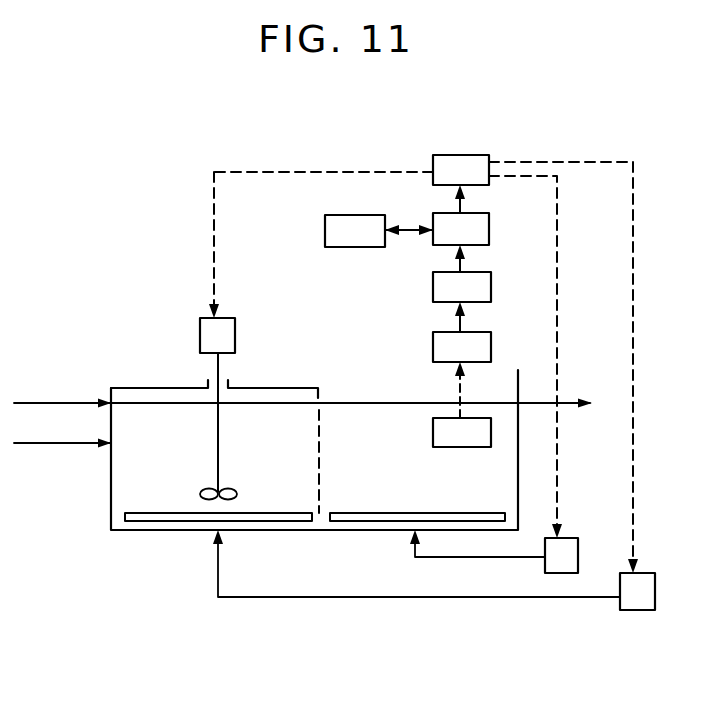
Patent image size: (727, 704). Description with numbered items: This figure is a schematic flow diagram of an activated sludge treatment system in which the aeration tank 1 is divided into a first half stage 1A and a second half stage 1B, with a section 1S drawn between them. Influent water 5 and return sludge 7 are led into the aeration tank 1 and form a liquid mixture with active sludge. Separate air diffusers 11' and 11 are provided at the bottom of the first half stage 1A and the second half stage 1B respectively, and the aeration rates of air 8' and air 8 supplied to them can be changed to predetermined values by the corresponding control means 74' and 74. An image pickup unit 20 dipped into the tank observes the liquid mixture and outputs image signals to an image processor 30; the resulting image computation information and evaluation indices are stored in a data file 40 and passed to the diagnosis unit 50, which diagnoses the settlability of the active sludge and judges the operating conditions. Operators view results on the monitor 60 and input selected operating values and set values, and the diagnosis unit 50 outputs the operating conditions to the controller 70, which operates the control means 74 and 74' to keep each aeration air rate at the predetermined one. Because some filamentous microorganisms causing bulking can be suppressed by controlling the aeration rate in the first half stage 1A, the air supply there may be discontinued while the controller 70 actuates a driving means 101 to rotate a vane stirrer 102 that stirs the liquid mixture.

The aeration tank 1 is at (160, 532).
The first half stage 1A is at (166, 441).
The settling section 1S is at (270, 441).
The second half stage 1B is at (398, 489).
The influent water 5 is at (47, 400).
The return sludge 7 is at (47, 450).
The air 8 is at (438, 557).
The air 8' is at (416, 599).
The air diffuser 11 is at (417, 490).
The air diffuser 11' is at (218, 489).
The image pickup unit 20 is at (433, 432).
The image processor 30 is at (433, 347).
The data file 40 is at (433, 290).
The diagnosis unit 50 is at (490, 234).
The monitor 60 is at (325, 230).
The controller 70 is at (460, 155).
The aeration air rate-controlling means 74 is at (581, 525).
The aeration air rate-controlling means 74' is at (640, 624).
The driving means 101 is at (200, 333).
The vane stirrer 102 is at (218, 468).